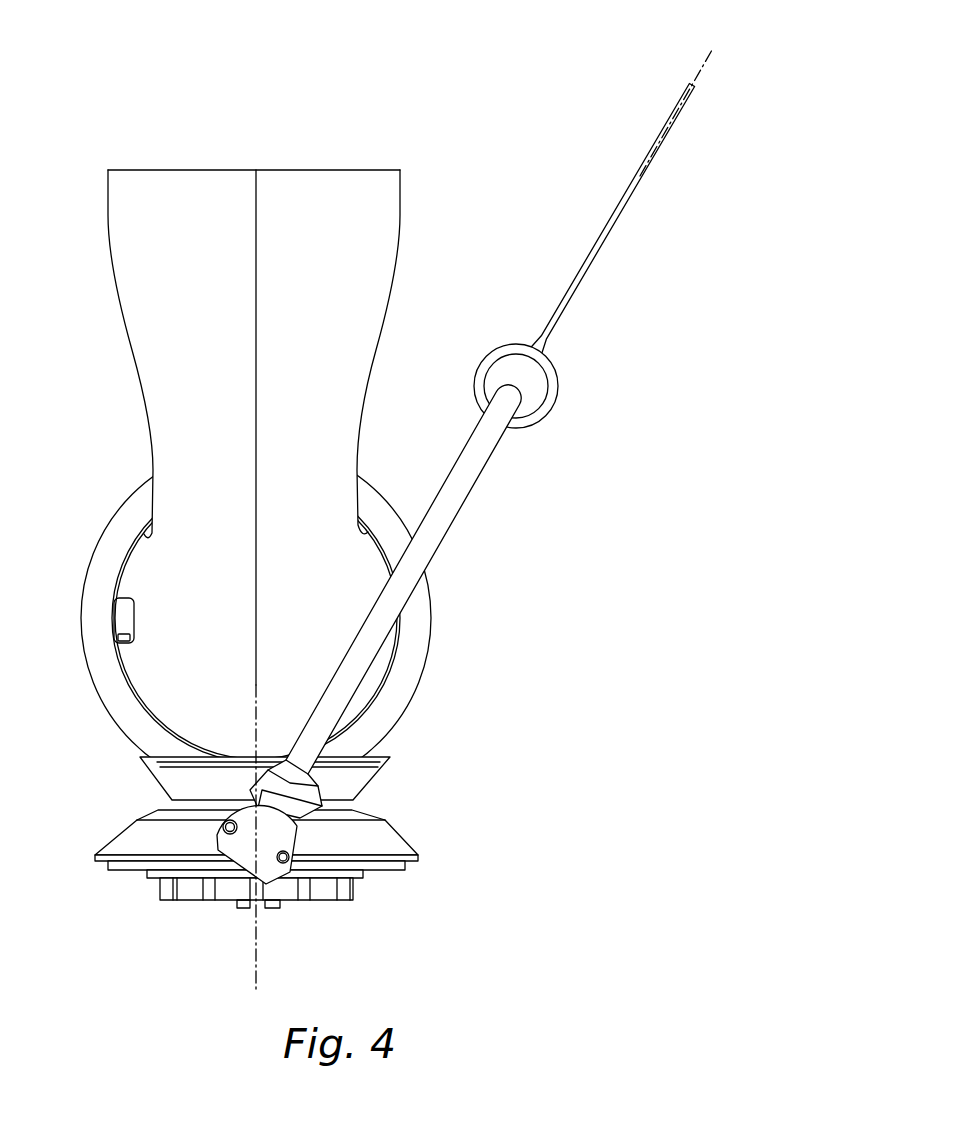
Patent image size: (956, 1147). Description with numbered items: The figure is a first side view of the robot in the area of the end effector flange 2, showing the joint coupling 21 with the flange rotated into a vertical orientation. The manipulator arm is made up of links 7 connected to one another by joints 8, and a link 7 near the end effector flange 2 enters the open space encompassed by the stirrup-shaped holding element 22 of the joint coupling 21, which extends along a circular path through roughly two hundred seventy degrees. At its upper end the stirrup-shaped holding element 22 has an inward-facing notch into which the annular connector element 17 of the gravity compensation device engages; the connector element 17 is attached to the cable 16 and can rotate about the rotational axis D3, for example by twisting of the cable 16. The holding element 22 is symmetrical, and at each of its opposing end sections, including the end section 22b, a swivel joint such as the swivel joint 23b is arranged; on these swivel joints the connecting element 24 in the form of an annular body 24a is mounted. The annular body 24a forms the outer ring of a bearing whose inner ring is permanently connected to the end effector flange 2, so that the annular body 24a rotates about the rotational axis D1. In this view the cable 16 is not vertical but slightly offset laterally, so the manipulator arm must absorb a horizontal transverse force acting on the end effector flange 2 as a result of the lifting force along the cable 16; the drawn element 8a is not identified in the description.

The end effector flange 2 is at (307, 893).
The link 7 is at (188, 643).
The joint 8 is at (398, 772).
The pivot plate portion 8a is at (337, 805).
The cable 16 is at (615, 215).
The connector element 17 is at (550, 407).
The joint coupling 21 is at (512, 490).
The stirrup-shaped holding element 22 is at (450, 503).
The end section 22b is at (285, 792).
The swivel joint 23b is at (270, 833).
The connecting element 24 is at (254, 903).
The annular body 24a is at (180, 840).
The rotational axis D1 is at (262, 950).
The rotational axis D3 is at (687, 82).